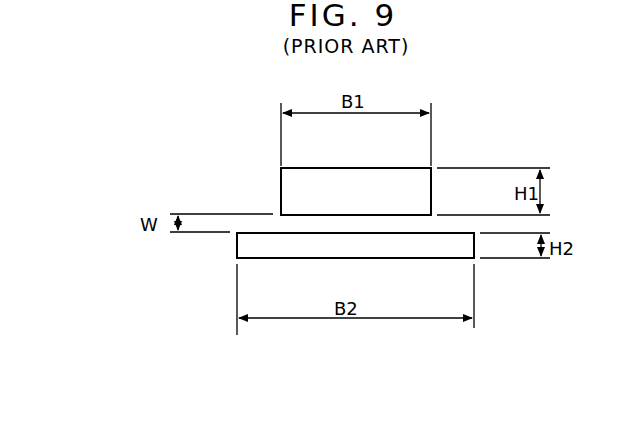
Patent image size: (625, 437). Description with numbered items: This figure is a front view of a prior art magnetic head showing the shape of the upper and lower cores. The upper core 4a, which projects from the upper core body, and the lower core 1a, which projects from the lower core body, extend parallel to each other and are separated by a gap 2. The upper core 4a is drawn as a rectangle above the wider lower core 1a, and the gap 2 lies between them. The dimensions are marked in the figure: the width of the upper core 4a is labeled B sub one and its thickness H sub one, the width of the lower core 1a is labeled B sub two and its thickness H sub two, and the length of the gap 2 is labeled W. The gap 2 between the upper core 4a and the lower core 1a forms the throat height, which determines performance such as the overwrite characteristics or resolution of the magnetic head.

The upper core 4a is at (297, 192).
The lower core 1a is at (257, 248).
The gap 2 is at (292, 225).